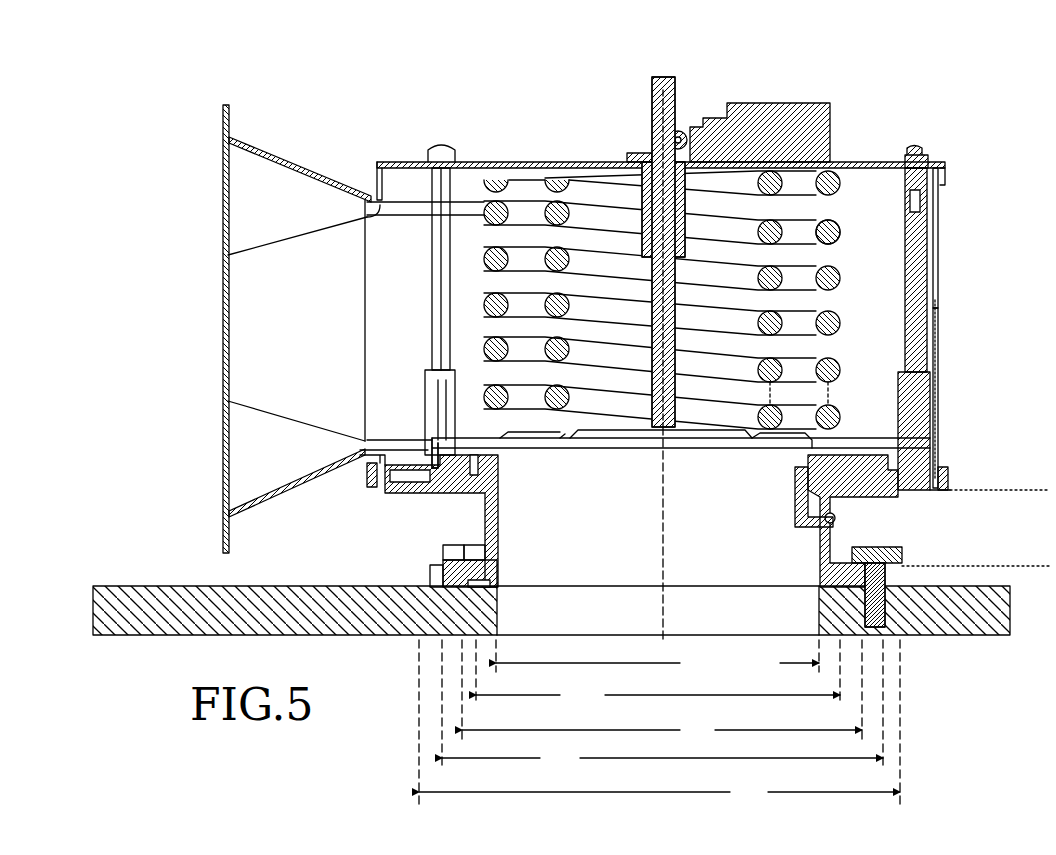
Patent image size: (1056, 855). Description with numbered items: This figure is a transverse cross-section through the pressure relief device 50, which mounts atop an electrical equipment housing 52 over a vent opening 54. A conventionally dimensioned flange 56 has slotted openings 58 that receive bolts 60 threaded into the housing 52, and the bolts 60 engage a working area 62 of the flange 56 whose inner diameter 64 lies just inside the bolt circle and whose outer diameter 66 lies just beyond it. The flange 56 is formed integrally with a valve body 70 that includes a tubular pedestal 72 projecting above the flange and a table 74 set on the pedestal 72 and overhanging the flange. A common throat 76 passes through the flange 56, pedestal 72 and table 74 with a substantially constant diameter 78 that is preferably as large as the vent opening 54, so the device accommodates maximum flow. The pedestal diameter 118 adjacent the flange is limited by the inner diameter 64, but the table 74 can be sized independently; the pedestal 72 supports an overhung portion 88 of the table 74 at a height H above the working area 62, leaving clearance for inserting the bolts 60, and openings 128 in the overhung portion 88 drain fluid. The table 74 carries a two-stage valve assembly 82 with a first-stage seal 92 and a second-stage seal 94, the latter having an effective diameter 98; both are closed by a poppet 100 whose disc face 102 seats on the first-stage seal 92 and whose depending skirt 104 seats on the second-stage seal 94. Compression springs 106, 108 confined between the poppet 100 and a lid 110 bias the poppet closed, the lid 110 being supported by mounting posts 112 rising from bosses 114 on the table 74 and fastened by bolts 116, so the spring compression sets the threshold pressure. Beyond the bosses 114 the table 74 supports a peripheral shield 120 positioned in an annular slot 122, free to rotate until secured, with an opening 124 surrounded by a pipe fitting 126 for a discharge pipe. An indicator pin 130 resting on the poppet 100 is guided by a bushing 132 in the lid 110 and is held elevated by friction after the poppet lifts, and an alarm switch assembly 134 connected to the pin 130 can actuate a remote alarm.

The pressure relief device 50 is at (338, 103).
The electrical equipment housing 52 is at (125, 586).
The vent opening 54 is at (822, 600).
The flange 56 is at (430, 575).
The slotted openings 58 is at (900, 570).
The bolts 60 is at (903, 555).
The working area 62 is at (443, 553).
The inner diameter 64 is at (662, 691).
The outer diameter 66 is at (659, 722).
The valve body 70 is at (501, 530).
The pedestal 72 is at (485, 520).
The table 74 is at (370, 487).
The throat 76 is at (498, 578).
The throat diameter 78 is at (657, 658).
The two-stage valve assembly 82 is at (445, 432).
The overhung portion 88 is at (946, 490).
The first-stage seal 92 is at (815, 456).
The second-stage seal 94 is at (897, 447).
The effective diameter of second-stage valve opening 98 is at (662, 705).
The poppet 100 is at (681, 450).
The disc face 102 is at (502, 455).
The depending skirt 104 is at (905, 422).
The compression spring 106 is at (790, 252).
The compression spring 108 is at (840, 236).
The lid 110 is at (555, 161).
The mounting posts 112 is at (434, 270).
The bosses 114 is at (939, 365).
The bolts 116 is at (920, 148).
The pedestal diameter 118 is at (658, 674).
The peripheral shield 120 is at (939, 220).
The annular slot 122 is at (946, 472).
The opening 124 is at (370, 216).
The pipe fitting 126 is at (222, 140).
The openings 128 is at (420, 498).
The indicator pin 130 is at (651, 85).
The bushing 132 is at (645, 150).
The alarm switch assembly 134 is at (795, 103).
The height H is at (1035, 468).